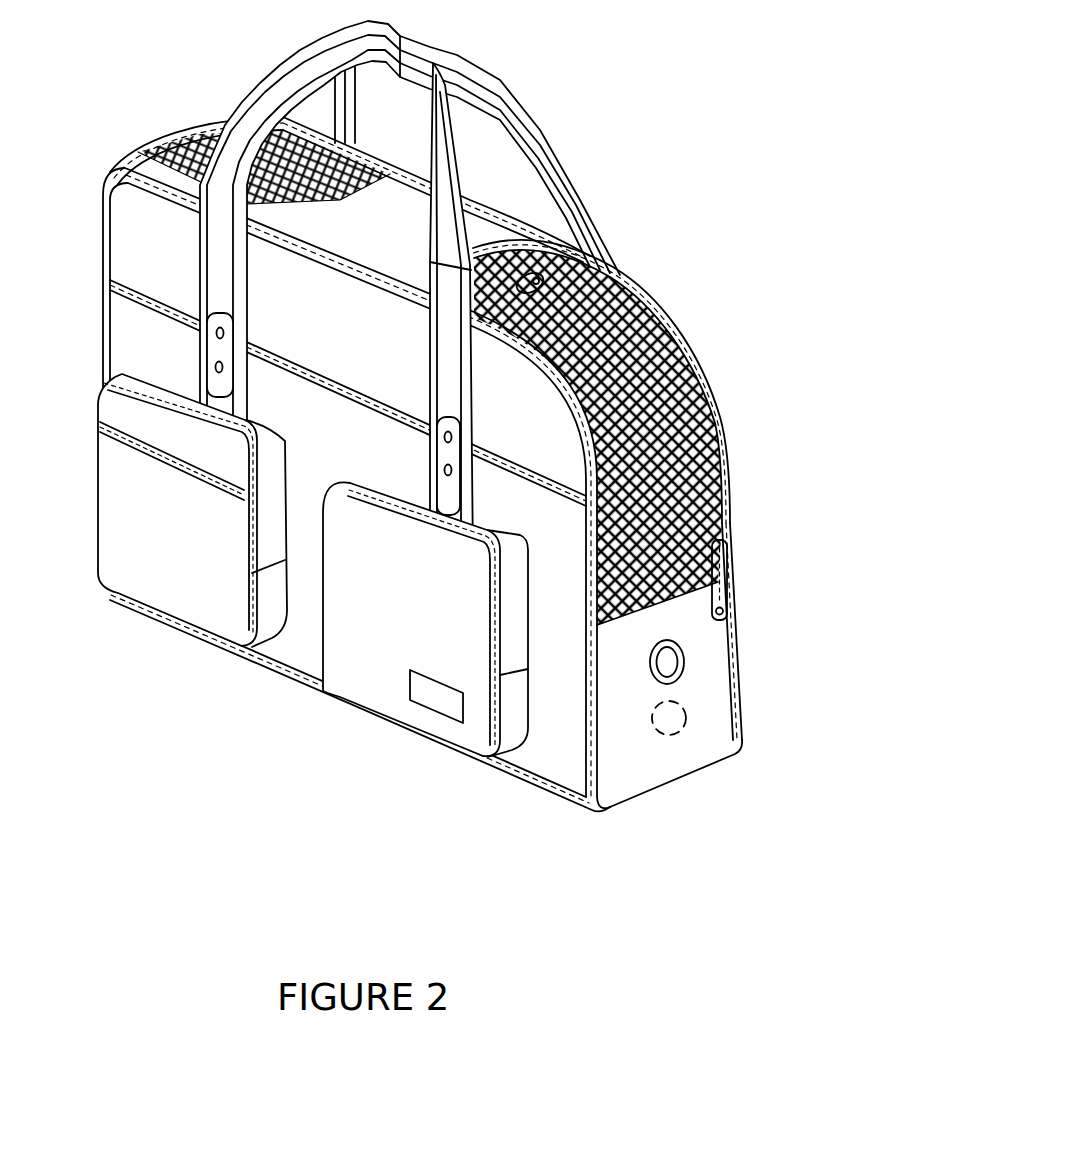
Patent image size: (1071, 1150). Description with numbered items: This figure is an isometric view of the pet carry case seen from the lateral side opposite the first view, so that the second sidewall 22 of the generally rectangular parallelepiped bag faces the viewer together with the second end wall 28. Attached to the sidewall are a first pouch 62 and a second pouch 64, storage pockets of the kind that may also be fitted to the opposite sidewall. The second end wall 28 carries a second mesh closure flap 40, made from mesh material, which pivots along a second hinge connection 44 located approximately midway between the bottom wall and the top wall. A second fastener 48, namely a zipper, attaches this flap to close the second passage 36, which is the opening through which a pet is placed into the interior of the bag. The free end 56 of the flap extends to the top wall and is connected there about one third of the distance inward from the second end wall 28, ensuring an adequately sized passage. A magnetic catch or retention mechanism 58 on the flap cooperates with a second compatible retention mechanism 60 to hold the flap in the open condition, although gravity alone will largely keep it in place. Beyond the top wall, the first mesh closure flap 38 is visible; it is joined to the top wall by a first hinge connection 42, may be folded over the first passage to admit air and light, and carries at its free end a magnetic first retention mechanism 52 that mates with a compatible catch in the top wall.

The second sidewall 22 is at (300, 667).
The second end wall 28 is at (627, 763).
The second passage 36 is at (718, 483).
The first mesh closure flap 38 is at (188, 140).
The second mesh closure flap 40 is at (664, 404).
The first hinge connection 42 is at (340, 200).
The second hinge connection 44 is at (673, 590).
The second fastener 48 is at (729, 520).
The first retention mechanism 52 is at (527, 262).
The free end 56 is at (493, 240).
The retention mechanism 58 is at (622, 273).
The second compatible retention mechanism 60 is at (683, 715).
The first pouch 62 is at (152, 570).
The second pouch 64 is at (377, 693).